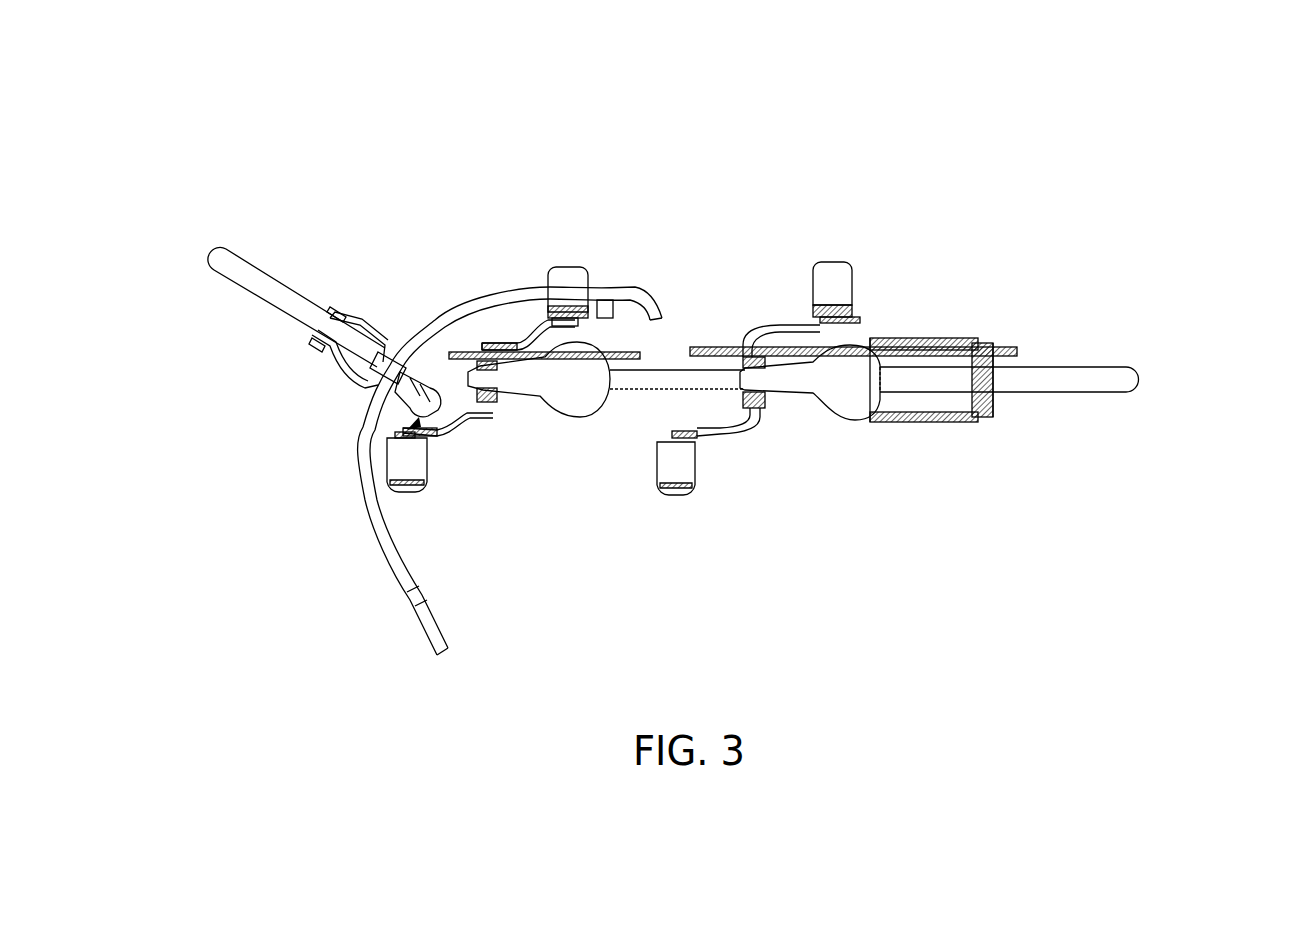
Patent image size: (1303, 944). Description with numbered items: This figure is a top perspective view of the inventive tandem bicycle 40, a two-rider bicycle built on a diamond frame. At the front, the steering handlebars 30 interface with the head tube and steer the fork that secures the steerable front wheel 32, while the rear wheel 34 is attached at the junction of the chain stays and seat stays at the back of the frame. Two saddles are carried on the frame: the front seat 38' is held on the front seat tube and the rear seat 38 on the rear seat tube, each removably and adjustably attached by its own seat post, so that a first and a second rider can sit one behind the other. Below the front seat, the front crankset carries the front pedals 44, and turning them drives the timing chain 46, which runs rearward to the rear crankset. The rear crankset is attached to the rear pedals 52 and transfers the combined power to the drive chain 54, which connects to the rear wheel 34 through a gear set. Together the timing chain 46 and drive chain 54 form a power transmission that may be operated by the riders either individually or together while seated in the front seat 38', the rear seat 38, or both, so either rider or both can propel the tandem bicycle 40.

The steering handlebars 30 is at (410, 590).
The steerable front wheel 32 is at (270, 283).
The rear wheel 34 is at (1085, 368).
The rear seat 38 is at (904, 315).
The front seat 38' is at (635, 281).
The tandem bicycle 40 is at (450, 231).
The front pedals 44 is at (430, 478).
The timing chain 46 is at (640, 356).
The rear pedals 52 is at (700, 486).
The drive chain 54 is at (975, 348).